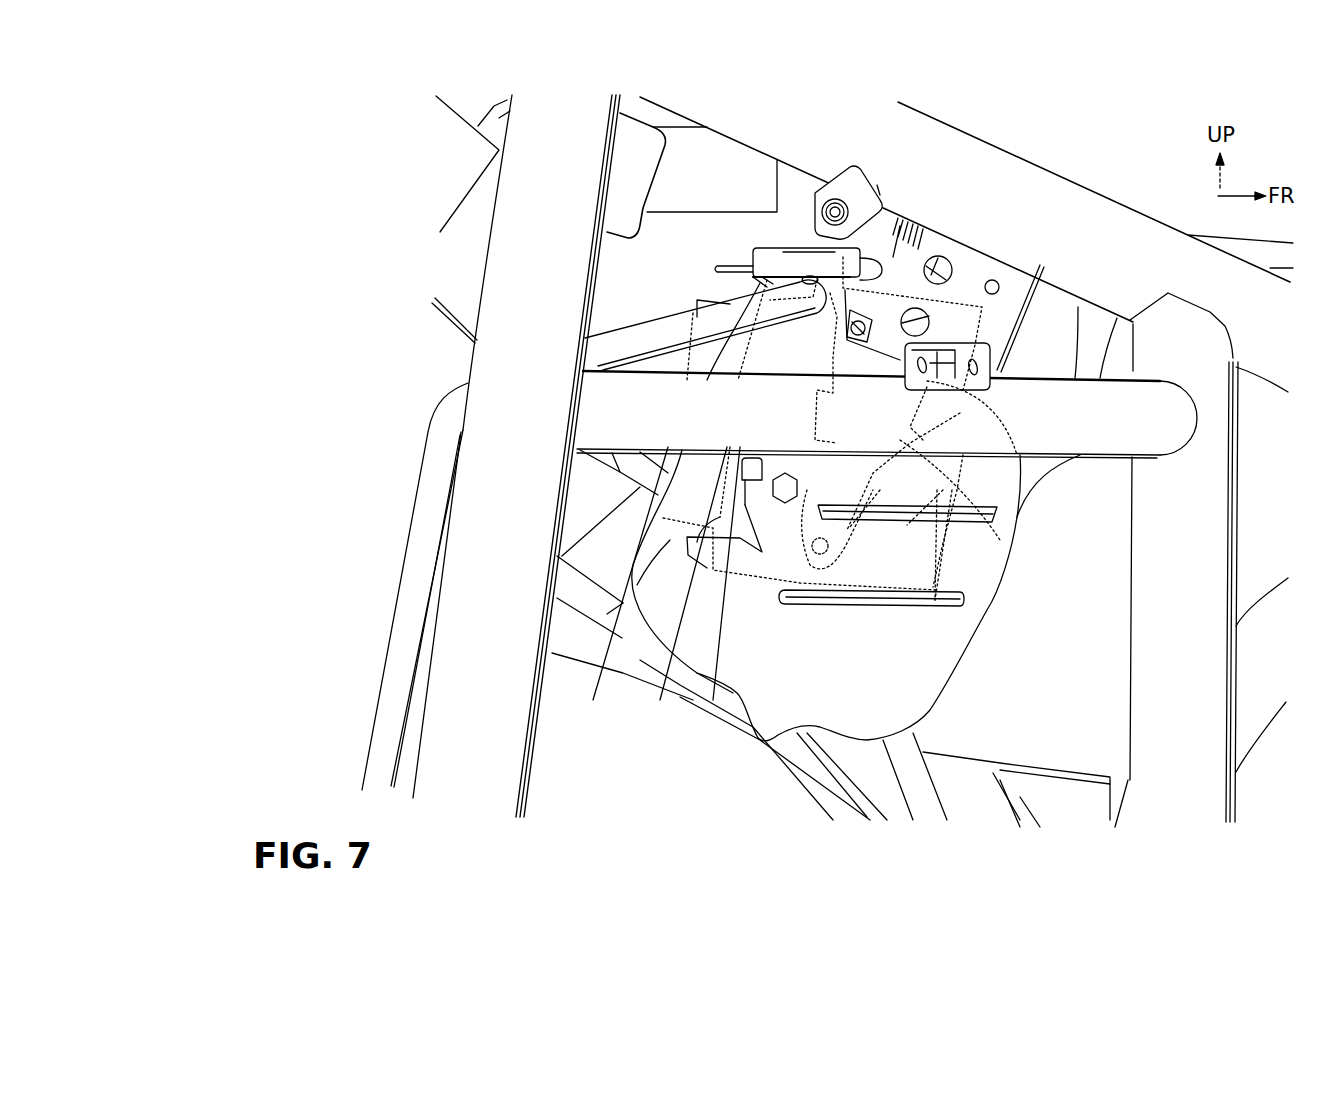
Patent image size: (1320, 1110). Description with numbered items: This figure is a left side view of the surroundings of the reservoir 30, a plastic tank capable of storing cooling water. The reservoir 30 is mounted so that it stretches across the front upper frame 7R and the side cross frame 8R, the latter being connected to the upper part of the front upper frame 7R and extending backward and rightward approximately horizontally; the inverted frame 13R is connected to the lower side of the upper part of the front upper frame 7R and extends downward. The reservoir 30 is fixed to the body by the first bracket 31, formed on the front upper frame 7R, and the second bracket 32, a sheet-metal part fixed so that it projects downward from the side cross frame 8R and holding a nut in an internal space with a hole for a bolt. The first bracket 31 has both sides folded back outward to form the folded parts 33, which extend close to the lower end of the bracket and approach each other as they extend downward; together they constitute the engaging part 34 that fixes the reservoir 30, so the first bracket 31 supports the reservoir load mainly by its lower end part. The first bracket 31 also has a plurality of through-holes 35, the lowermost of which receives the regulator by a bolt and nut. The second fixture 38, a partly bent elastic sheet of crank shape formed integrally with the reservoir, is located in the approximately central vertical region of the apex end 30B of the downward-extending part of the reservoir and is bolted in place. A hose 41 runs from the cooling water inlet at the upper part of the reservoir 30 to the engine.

The front upper frame 7R is at (1053, 197).
The side cross frame 8R is at (1100, 447).
The inverted frame 13R is at (1204, 493).
The reservoir 30 is at (816, 600).
The end 30B is at (634, 572).
The first bracket 31 is at (888, 232).
The second bracket 32 is at (738, 542).
The folded parts 33 is at (960, 527).
The engaging part 34 is at (941, 558).
The through-holes 35 is at (940, 268).
The second fixture 38 is at (684, 545).
The hose 41 is at (627, 348).